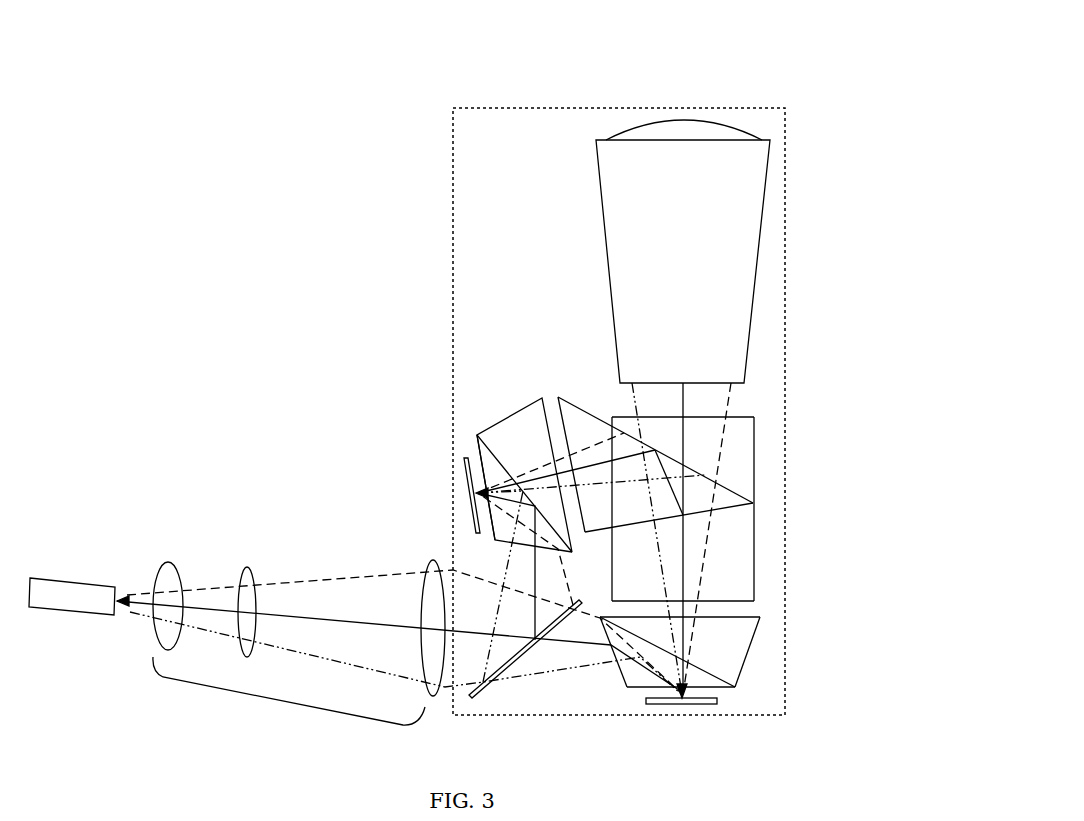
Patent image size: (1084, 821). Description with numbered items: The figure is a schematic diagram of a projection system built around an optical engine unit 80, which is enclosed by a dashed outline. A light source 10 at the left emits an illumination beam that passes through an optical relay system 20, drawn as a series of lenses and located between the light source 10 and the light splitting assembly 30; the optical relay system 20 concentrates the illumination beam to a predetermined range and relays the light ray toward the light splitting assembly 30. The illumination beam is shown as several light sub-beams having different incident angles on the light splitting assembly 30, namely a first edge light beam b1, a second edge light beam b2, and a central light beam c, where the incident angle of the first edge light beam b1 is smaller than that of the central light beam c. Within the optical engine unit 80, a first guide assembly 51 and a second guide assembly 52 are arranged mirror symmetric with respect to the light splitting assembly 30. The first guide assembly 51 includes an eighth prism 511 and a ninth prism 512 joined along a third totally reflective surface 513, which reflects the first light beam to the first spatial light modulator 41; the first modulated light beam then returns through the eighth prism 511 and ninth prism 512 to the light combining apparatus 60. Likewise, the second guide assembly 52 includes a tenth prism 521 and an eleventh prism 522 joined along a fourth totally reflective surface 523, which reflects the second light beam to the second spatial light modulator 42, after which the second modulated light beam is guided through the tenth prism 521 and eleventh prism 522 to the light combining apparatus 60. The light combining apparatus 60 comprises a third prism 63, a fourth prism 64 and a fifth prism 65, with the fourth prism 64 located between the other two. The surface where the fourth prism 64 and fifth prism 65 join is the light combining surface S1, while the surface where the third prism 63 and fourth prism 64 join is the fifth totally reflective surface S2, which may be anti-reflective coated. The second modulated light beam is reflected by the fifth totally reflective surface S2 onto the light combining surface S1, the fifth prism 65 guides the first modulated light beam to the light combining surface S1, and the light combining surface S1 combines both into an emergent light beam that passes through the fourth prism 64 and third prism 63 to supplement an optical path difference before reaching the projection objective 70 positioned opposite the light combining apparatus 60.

The light source 10 is at (53, 612).
The optical relay system 20 is at (283, 707).
The light splitting assembly 30 is at (476, 692).
The first spatial light modulator 41 is at (675, 706).
The second spatial light modulator 42 is at (470, 504).
The first guide assembly 51 is at (713, 694).
The eighth prism 511 is at (627, 688).
The ninth prism 512 is at (735, 667).
The third totally reflective surface 513 is at (715, 680).
The second guide assembly 52 is at (615, 454).
The tenth prism 521 is at (488, 465).
The eleventh prism 522 is at (515, 422).
The fourth totally reflective surface 523 is at (484, 468).
The light combining apparatus 60 is at (727, 523).
The third prism 63 is at (738, 440).
The fourth prism 64 is at (738, 512).
The fifth prism 65 is at (743, 578).
The projection objective 70 is at (752, 315).
The optical engine unit 80 is at (600, 97).
The light combining surface S1 is at (750, 505).
The fifth totally reflective surface S2 is at (745, 497).
The first edge light beam b1 is at (147, 583).
The second edge light beam b2 is at (148, 627).
The central light beam c is at (127, 608).